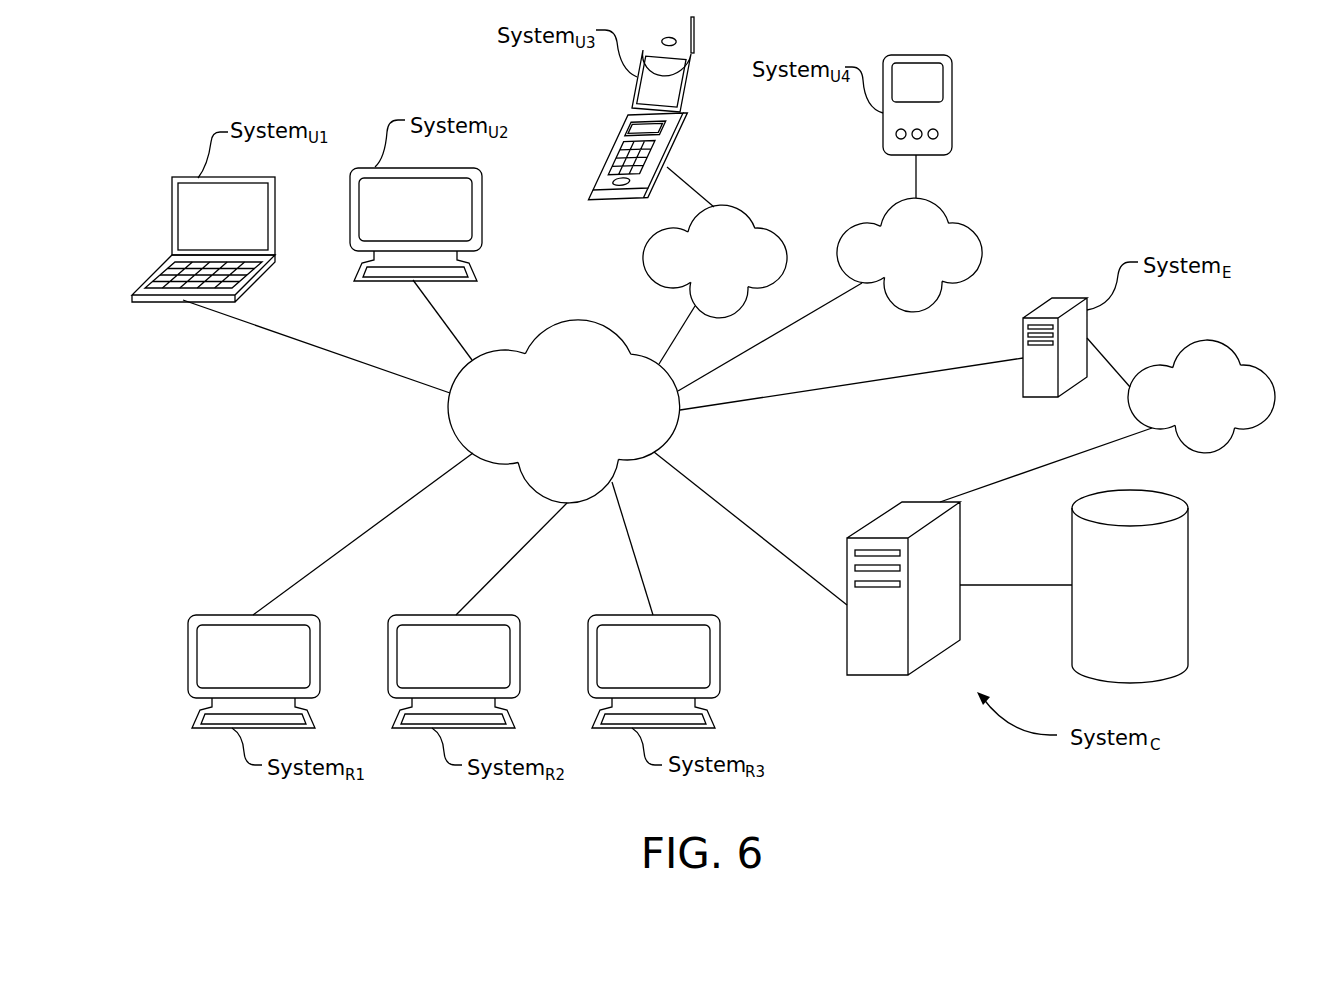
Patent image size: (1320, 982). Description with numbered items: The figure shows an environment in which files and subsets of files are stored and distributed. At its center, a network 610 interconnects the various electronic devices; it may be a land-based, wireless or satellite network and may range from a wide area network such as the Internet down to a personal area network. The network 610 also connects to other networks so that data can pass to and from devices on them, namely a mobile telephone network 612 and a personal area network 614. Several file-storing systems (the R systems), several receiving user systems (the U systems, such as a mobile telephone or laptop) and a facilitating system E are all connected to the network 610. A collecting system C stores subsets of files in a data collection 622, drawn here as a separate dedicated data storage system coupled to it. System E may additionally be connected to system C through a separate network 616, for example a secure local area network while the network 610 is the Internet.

The network 610 is at (592, 445).
The mobile telephone network 612 is at (700, 290).
The personal area network 614 is at (892, 283).
The separate network 616 is at (1185, 426).
The data collection 622 is at (1112, 643).